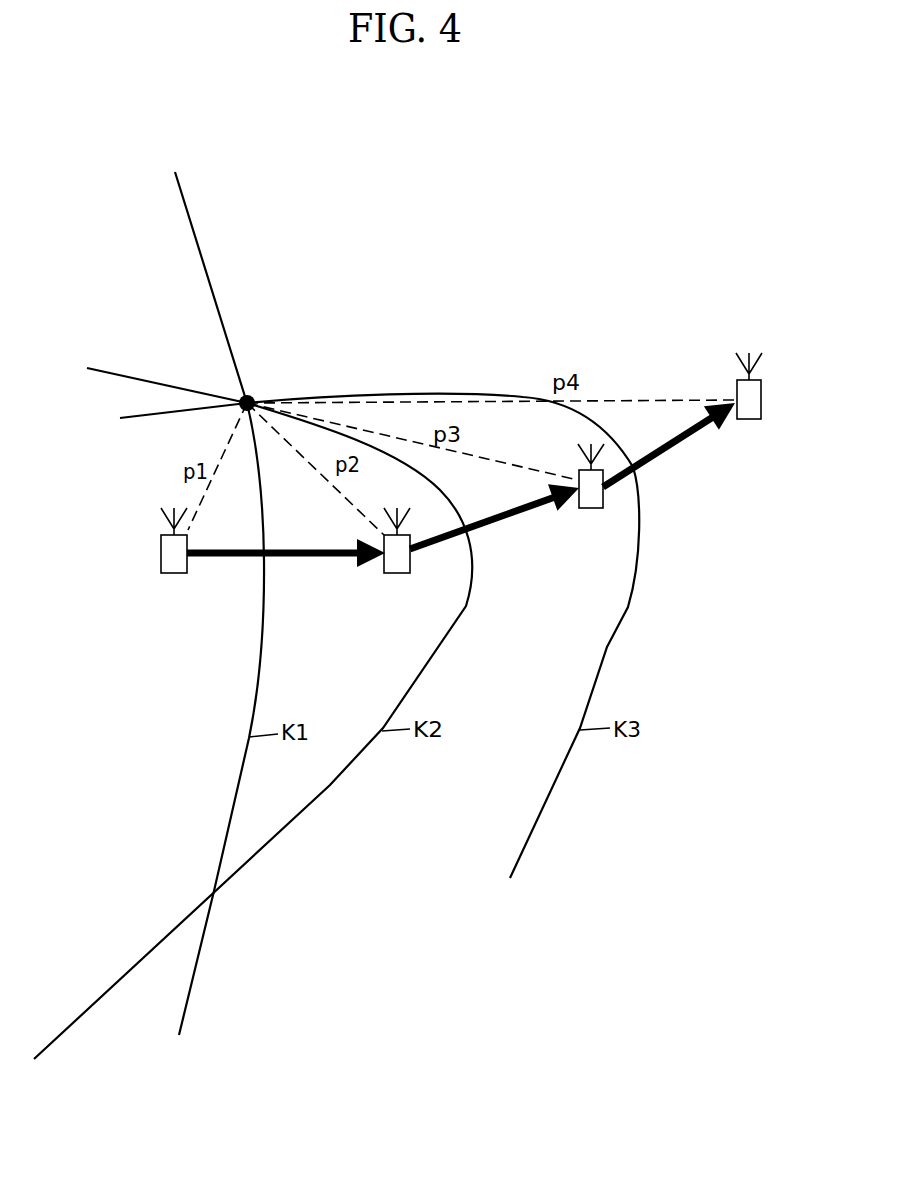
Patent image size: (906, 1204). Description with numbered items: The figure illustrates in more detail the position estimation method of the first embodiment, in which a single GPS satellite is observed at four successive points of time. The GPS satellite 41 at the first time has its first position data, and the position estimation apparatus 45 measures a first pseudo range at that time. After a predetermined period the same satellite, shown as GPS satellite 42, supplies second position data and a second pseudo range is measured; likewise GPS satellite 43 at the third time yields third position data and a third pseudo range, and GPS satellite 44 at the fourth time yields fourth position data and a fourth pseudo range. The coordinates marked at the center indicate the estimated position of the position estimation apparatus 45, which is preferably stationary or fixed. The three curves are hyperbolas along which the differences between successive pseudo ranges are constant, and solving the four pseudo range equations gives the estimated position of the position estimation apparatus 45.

The GPS satellite 41 is at (174, 573).
The GPS satellite 42 is at (397, 573).
The GPS satellite 43 is at (591, 508).
The GPS satellite 44 is at (749, 419).
The position estimation apparatus 45 is at (250, 400).